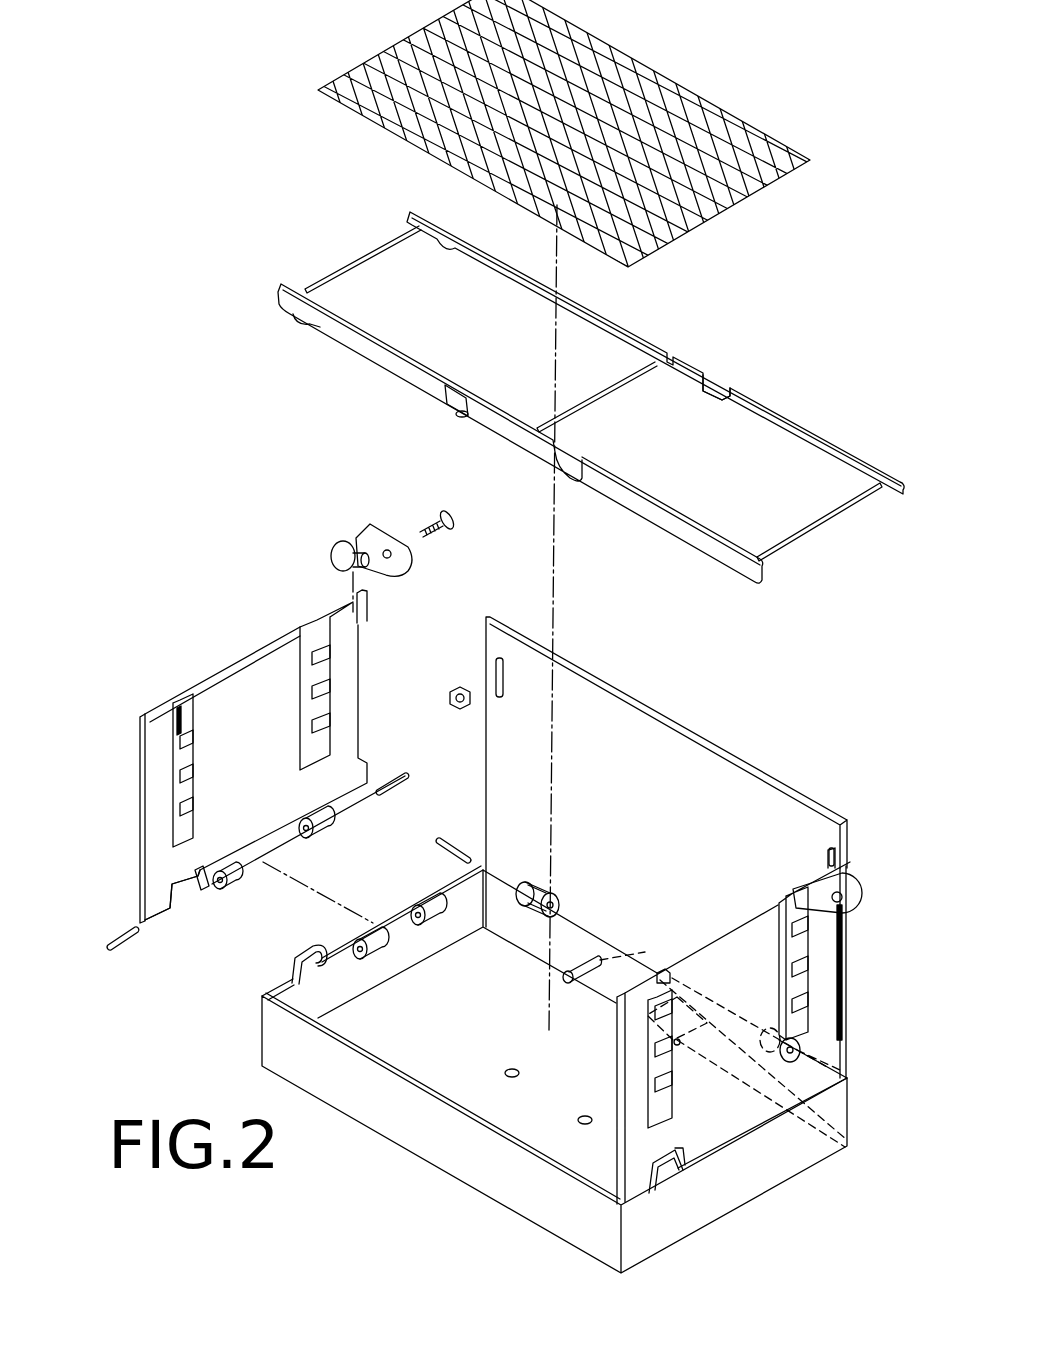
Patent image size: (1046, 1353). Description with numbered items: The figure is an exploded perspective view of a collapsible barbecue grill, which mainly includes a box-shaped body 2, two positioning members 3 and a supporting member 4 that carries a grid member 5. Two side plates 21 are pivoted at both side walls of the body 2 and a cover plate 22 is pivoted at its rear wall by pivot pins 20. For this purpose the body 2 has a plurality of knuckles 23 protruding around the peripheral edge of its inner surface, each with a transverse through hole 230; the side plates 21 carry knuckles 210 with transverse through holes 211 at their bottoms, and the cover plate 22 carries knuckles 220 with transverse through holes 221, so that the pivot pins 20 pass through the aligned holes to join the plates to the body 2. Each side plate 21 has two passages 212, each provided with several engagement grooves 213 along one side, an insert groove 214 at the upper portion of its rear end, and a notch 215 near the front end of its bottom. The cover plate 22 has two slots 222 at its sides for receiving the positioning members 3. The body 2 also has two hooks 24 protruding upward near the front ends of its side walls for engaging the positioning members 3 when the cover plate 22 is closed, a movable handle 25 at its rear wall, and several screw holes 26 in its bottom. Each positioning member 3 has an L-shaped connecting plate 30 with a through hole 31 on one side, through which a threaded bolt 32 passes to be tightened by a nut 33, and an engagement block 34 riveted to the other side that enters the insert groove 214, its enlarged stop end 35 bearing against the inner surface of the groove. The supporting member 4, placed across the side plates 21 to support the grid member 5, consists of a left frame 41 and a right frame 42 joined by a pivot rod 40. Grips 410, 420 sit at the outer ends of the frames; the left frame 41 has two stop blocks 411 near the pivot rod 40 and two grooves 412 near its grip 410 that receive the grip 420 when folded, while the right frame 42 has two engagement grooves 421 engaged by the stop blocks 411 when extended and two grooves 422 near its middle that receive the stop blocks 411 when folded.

The body 2 is at (546, 1068).
The positioning member 3 is at (580, 685).
The supporting member 4 is at (549, 406).
The grid member 5 is at (752, 193).
The pivot pin 20 is at (378, 782).
The side plate 21 is at (491, 901).
The cover plate 22 is at (681, 746).
The knuckle 23 is at (533, 934).
The hook 24 is at (290, 960).
The movable handle 25 is at (625, 990).
The screw hole 26 is at (507, 1077).
The L-shaped connecting plate 30 is at (363, 523).
The through hole 31 is at (389, 549).
The threaded bolt 32 is at (445, 532).
The nut 33 is at (455, 692).
The engagement block 34 is at (331, 553).
The stop end 35 is at (390, 572).
The pivot rod 40 is at (615, 383).
The left frame 41 is at (472, 433).
The right frame 42 is at (655, 353).
The knuckle 210 is at (230, 870).
The transverse through hole 211 is at (217, 888).
The passage 212 is at (313, 637).
The engagement groove 213 is at (190, 727).
The insert groove 214 is at (370, 615).
The notch 215 is at (180, 872).
The knuckle 220 is at (517, 907).
The transverse through hole 221 is at (530, 880).
The slot 222 is at (502, 657).
The transverse through hole 230 is at (355, 947).
The grip 410 is at (328, 275).
The stop block 411 is at (458, 416).
The groove 412 is at (297, 317).
The grip 420 is at (813, 533).
The engagement groove 421 is at (458, 398).
The groove 422 is at (722, 372).